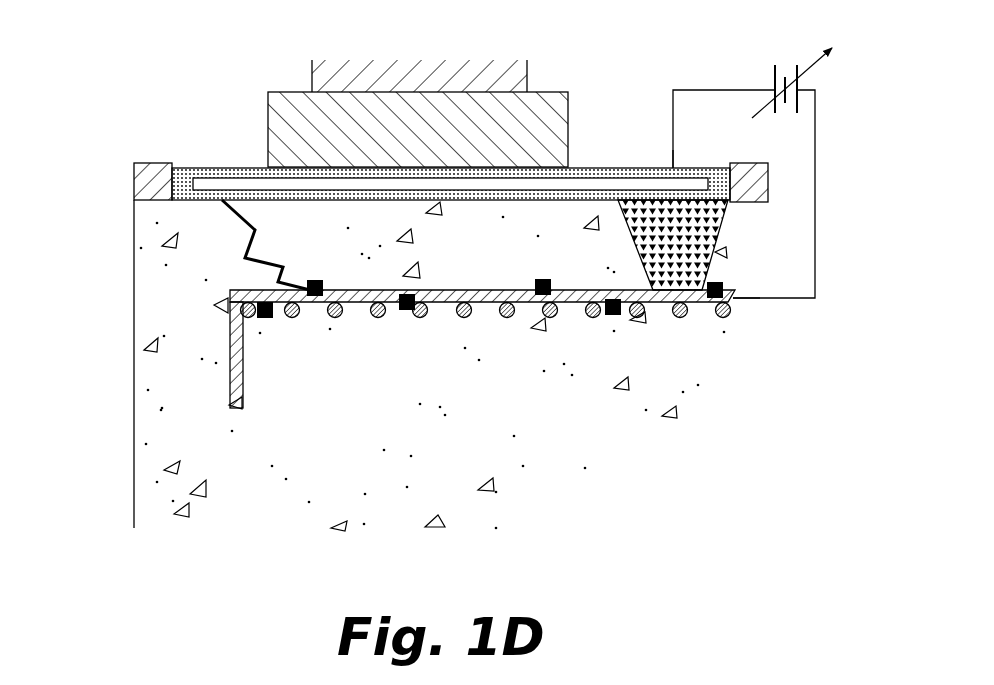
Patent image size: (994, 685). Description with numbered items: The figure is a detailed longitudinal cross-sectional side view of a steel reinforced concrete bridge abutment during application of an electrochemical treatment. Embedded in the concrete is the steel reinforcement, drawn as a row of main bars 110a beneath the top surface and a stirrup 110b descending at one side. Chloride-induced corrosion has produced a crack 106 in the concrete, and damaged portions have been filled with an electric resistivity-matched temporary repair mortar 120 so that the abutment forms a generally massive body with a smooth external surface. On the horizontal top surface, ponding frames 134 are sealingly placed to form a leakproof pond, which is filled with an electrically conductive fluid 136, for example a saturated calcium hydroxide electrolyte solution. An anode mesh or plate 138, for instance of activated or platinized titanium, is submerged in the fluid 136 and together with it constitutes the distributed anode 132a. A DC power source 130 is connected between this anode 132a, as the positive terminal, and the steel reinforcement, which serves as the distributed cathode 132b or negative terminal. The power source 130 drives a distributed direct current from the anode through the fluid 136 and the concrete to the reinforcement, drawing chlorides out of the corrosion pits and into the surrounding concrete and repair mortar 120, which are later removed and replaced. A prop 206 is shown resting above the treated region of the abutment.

The crack 106 is at (253, 243).
The main bar 110a is at (465, 320).
The stirrup 110b is at (230, 369).
The electric resistivity-matched temporary repair mortar 120 is at (662, 262).
The DC power source 130 is at (760, 72).
The anode 132a is at (665, 153).
The cathode 132b is at (735, 302).
The ponding frame 134 is at (153, 182).
The electrically conductive fluid 136 is at (182, 182).
The anode mesh or plate 138 is at (572, 182).
The prop 206 is at (333, 78).